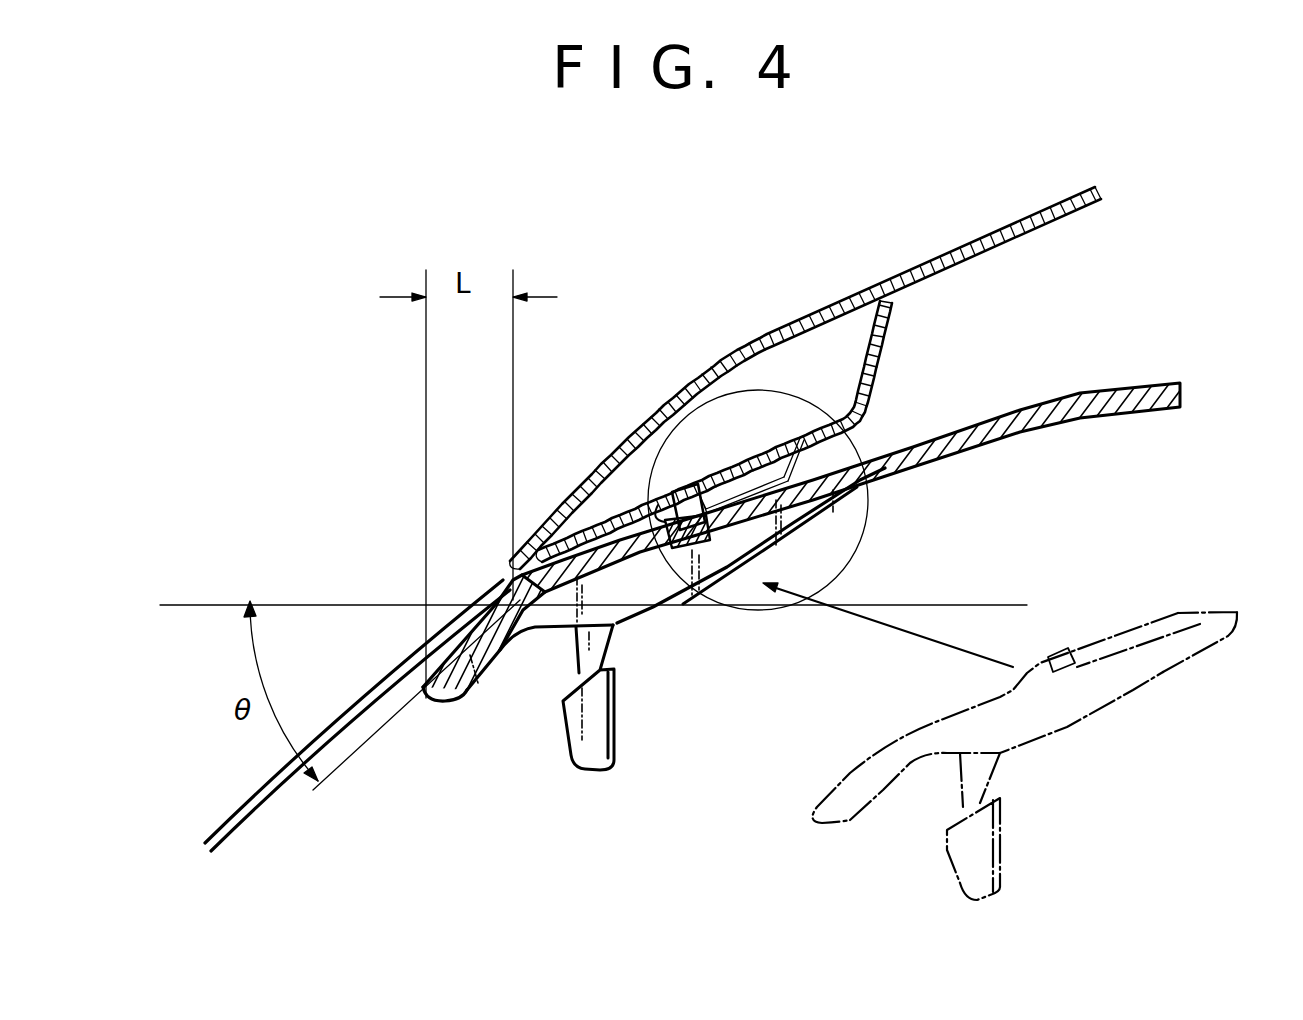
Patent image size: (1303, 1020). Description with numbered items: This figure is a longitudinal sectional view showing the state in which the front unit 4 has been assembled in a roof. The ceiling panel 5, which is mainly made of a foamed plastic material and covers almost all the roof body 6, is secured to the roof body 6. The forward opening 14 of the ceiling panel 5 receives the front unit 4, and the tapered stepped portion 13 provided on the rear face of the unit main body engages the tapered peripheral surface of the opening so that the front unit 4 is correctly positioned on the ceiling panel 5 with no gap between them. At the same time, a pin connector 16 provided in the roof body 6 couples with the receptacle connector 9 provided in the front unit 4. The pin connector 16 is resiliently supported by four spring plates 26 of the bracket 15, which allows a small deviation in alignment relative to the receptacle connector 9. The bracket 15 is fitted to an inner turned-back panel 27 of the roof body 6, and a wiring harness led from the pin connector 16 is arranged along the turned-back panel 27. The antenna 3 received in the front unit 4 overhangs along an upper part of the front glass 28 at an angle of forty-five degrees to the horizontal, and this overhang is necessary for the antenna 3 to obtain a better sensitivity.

The antenna 3 is at (453, 683).
The front unit 4 is at (653, 607).
The ceiling panel 5 is at (1005, 433).
The roof body 6 is at (848, 412).
The receptacle connector 9 is at (697, 537).
The tapered stepped portion 13 is at (1160, 613).
The forward opening 14 is at (836, 495).
The bracket 15 is at (800, 445).
The pin connector 16 is at (683, 490).
The spring plates 26 is at (777, 452).
The inner turned-back panel 27 is at (755, 462).
The front glass 28 is at (377, 688).